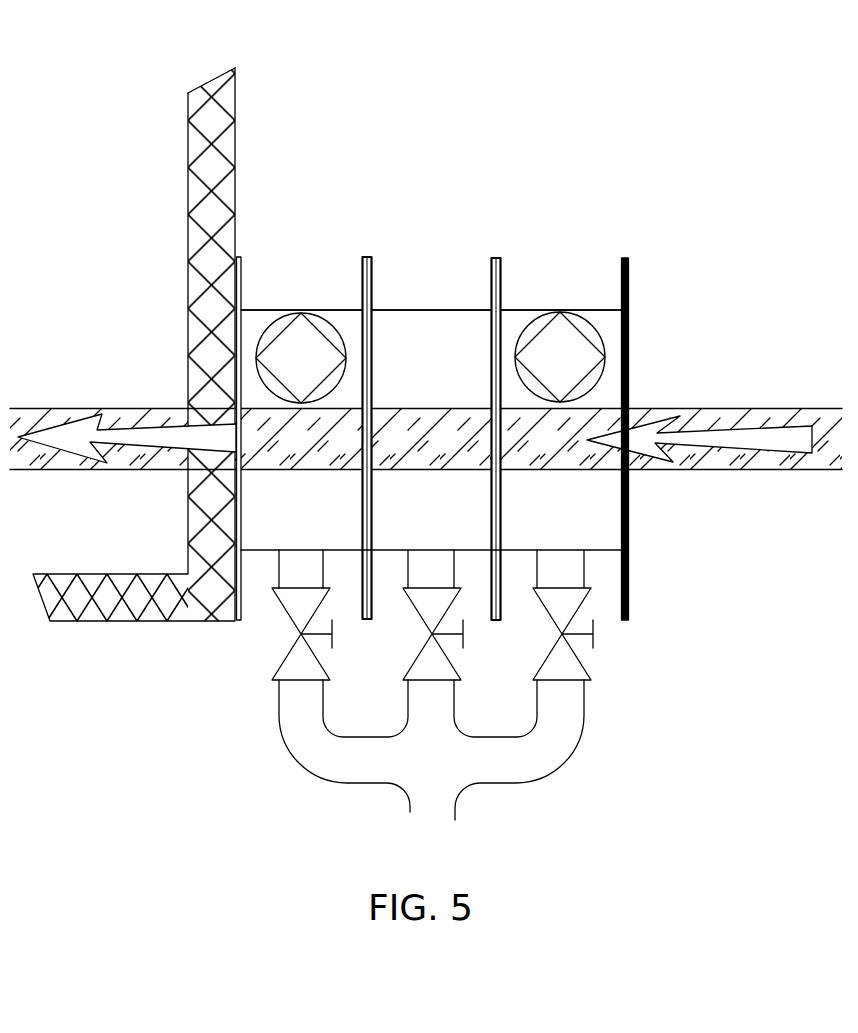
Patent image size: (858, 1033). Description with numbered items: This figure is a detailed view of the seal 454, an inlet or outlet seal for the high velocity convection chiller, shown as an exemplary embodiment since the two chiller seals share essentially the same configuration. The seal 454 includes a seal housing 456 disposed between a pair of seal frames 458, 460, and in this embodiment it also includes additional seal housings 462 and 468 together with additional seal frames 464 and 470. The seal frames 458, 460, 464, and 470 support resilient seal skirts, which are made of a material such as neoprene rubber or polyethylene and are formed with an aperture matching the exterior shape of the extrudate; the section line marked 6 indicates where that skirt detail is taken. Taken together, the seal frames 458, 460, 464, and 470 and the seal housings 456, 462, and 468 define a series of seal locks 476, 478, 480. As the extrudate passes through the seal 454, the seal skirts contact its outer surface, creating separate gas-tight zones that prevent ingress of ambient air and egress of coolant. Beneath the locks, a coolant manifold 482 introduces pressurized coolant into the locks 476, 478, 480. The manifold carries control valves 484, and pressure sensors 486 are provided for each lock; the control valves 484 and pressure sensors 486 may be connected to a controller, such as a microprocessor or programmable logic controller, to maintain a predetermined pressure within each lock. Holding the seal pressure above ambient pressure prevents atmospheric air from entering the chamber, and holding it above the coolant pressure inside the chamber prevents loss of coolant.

The seal 454 is at (451, 140).
The seal housing 456 is at (330, 308).
The seal frame 458 is at (241, 257).
The seal frame 460 is at (371, 257).
The seal housing 462 is at (420, 300).
The seal frame 464 is at (495, 257).
The seal housing 468 is at (576, 309).
The seal frame 470 is at (629, 257).
The seal lock 476 is at (268, 527).
The seal lock 478 is at (397, 532).
The seal lock 480 is at (527, 532).
The coolant manifold 482 is at (513, 784).
The control valve 484 is at (272, 681).
The pressure sensor 486 is at (283, 318).
The section line 6- 6 is at (654, 664).